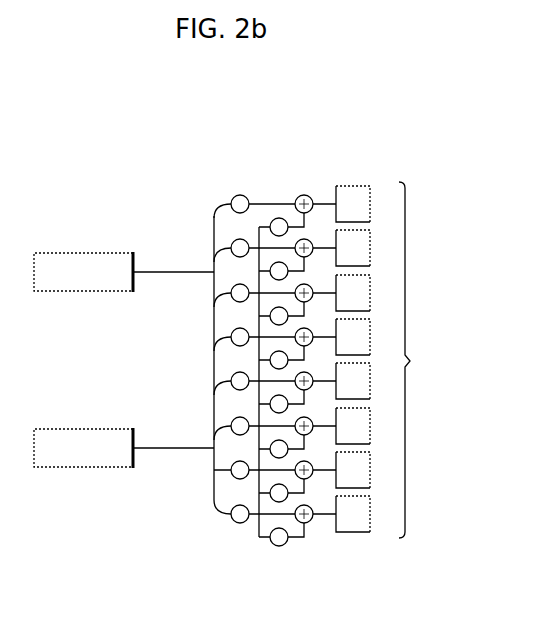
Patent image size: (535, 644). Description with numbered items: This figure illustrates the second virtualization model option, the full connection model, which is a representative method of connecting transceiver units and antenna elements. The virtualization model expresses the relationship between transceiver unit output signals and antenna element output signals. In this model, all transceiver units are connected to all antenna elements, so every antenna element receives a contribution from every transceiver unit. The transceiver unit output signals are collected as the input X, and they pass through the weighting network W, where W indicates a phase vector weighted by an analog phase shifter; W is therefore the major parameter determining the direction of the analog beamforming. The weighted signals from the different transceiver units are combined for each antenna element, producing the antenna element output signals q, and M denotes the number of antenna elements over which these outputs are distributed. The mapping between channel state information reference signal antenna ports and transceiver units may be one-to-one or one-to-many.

The input signal vector from TXRUs X is at (124, 359).
The phase vector W is at (275, 346).
The output signal vector q is at (367, 359).
The number of antenna elements M is at (414, 360).